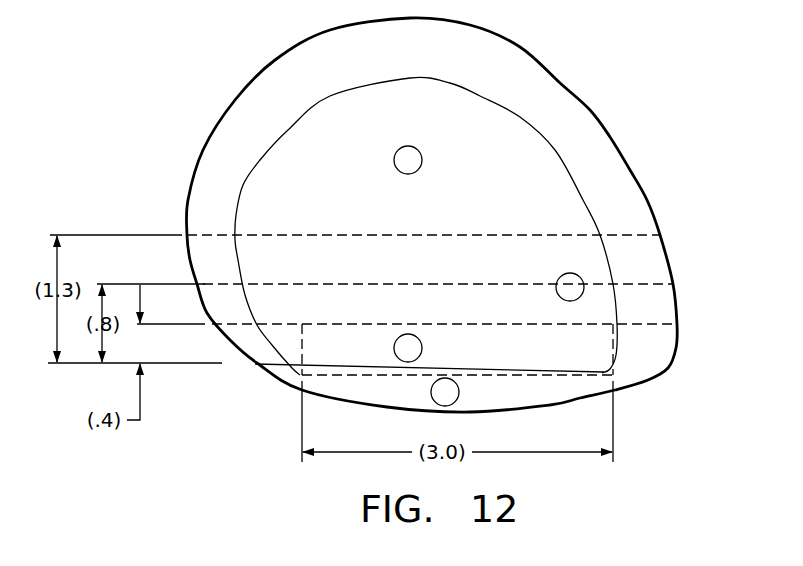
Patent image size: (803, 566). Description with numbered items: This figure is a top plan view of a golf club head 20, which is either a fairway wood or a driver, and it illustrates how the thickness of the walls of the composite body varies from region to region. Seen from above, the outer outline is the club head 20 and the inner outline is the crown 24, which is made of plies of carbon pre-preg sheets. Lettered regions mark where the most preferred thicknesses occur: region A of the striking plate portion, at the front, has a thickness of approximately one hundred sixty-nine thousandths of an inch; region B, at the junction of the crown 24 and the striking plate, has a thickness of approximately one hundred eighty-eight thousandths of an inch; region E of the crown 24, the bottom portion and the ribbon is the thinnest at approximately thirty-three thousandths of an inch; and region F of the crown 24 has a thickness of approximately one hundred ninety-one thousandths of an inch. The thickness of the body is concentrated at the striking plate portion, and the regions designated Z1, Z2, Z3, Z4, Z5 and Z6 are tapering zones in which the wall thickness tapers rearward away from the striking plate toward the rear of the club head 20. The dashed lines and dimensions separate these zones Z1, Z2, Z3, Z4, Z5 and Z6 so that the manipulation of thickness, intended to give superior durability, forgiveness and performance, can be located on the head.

The golf club head 20 is at (665, 142).
The crown 24 is at (510, 145).
The tapering zone Z1 is at (430, 259).
The tapering zone Z2 is at (444, 309).
The tapering zone Z3 is at (424, 261).
The tapering zone Z4 is at (435, 307).
The tapering zone Z5 is at (446, 349).
The tapering zone Z6 is at (407, 45).
The region A of the striking plate portion A is at (445, 392).
The region B at the junction of the crown and striking plate B is at (408, 348).
The region E of the crown, bottom portion and ribbon E is at (408, 160).
The region F of the crown F is at (570, 287).